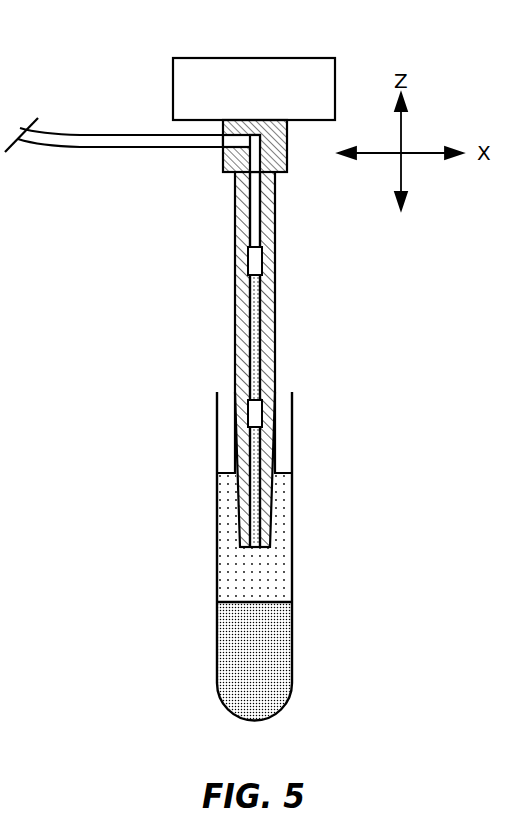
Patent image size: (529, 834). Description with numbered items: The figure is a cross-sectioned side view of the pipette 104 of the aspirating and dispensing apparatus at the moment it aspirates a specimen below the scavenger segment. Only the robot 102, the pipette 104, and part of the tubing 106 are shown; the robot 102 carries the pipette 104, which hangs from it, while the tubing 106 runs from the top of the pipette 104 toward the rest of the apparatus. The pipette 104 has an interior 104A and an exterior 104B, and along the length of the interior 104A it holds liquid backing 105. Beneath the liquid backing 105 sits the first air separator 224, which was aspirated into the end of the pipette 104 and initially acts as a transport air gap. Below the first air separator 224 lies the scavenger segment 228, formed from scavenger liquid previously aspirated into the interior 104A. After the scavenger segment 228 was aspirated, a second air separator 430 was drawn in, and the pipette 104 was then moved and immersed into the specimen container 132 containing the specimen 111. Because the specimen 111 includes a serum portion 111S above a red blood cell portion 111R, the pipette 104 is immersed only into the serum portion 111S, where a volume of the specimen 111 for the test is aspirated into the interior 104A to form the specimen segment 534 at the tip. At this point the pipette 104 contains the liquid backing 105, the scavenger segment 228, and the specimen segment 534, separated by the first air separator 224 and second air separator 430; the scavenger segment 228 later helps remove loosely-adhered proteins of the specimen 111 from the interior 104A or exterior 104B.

The robot 102 is at (292, 58).
The tubing 106 is at (113, 148).
The liquid backing 105 is at (248, 203).
The pipette 104 is at (241, 333).
The interior 104A is at (238, 300).
The exterior 104B is at (236, 236).
The scavenger segment 228 is at (255, 345).
The first air separator 224 is at (258, 258).
The second air separator 430 is at (255, 410).
The specimen segment 534 is at (258, 453).
The specimen container 132 is at (303, 531).
The specimen 111 is at (273, 586).
The serum portion 111S is at (282, 516).
The red blood cell portion 111R is at (276, 647).